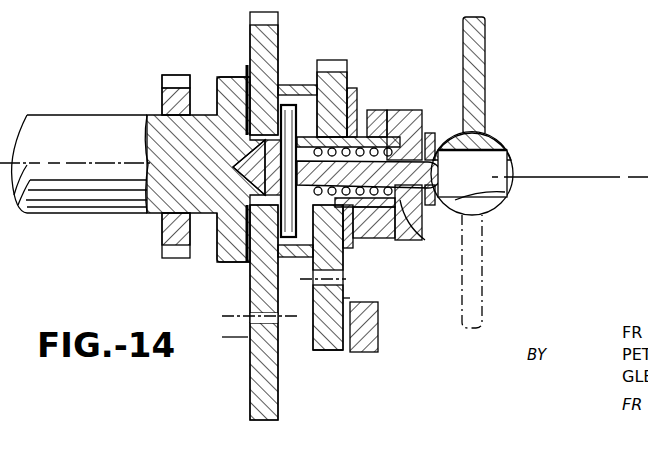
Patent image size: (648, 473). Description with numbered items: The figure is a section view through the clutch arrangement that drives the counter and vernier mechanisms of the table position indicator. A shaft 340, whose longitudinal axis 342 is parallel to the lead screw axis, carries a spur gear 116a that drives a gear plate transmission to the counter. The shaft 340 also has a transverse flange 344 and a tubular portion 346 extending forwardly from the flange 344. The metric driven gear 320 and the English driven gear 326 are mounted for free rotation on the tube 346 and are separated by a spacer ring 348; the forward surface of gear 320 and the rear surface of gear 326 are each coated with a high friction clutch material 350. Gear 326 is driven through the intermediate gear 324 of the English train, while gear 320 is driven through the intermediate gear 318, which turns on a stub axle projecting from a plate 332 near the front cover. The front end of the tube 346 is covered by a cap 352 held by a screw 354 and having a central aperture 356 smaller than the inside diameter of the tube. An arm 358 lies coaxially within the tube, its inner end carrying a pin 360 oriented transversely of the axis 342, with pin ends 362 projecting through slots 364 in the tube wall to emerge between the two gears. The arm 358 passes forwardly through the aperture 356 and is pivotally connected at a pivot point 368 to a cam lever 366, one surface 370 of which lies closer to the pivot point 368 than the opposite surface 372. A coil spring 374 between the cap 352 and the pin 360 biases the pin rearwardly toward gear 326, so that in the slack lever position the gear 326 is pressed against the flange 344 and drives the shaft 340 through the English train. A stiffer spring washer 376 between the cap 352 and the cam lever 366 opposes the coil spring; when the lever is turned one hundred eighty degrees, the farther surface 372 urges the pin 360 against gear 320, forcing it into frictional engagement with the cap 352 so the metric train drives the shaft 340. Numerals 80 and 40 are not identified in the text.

The shaft 340 is at (78, 118).
The spur gear 116a is at (163, 75).
The pin 360 is at (212, 80).
The high friction clutch material 350 is at (248, 135).
The transverse flange 344 is at (215, 262).
The driven gear 326 is at (278, 20).
The intermediate gear 324 is at (248, 385).
The frame 80 is at (219, 339).
The spacer ring 348 is at (294, 85).
The pin ends 362 is at (320, 60).
The intermediate gear 318 is at (330, 350).
The slots 364 is at (352, 118).
The screw 354 is at (380, 110).
The tubular portion 346 is at (370, 110).
The driven gear 320 is at (345, 58).
The cap 352 is at (412, 230).
The pivot point 368 is at (505, 198).
The spring washer 376 is at (428, 140).
The surface of cam lever 370 is at (433, 203).
The coil spring 374 is at (402, 228).
The central aperture 356 is at (470, 130).
The arm 358 is at (490, 212).
The cam lever 366 is at (484, 138).
The opposite surface of cam lever 372 is at (508, 158).
The longitudinal axis 342 is at (592, 177).
The plate 332 is at (378, 332).
The lever 40 is at (345, 298).